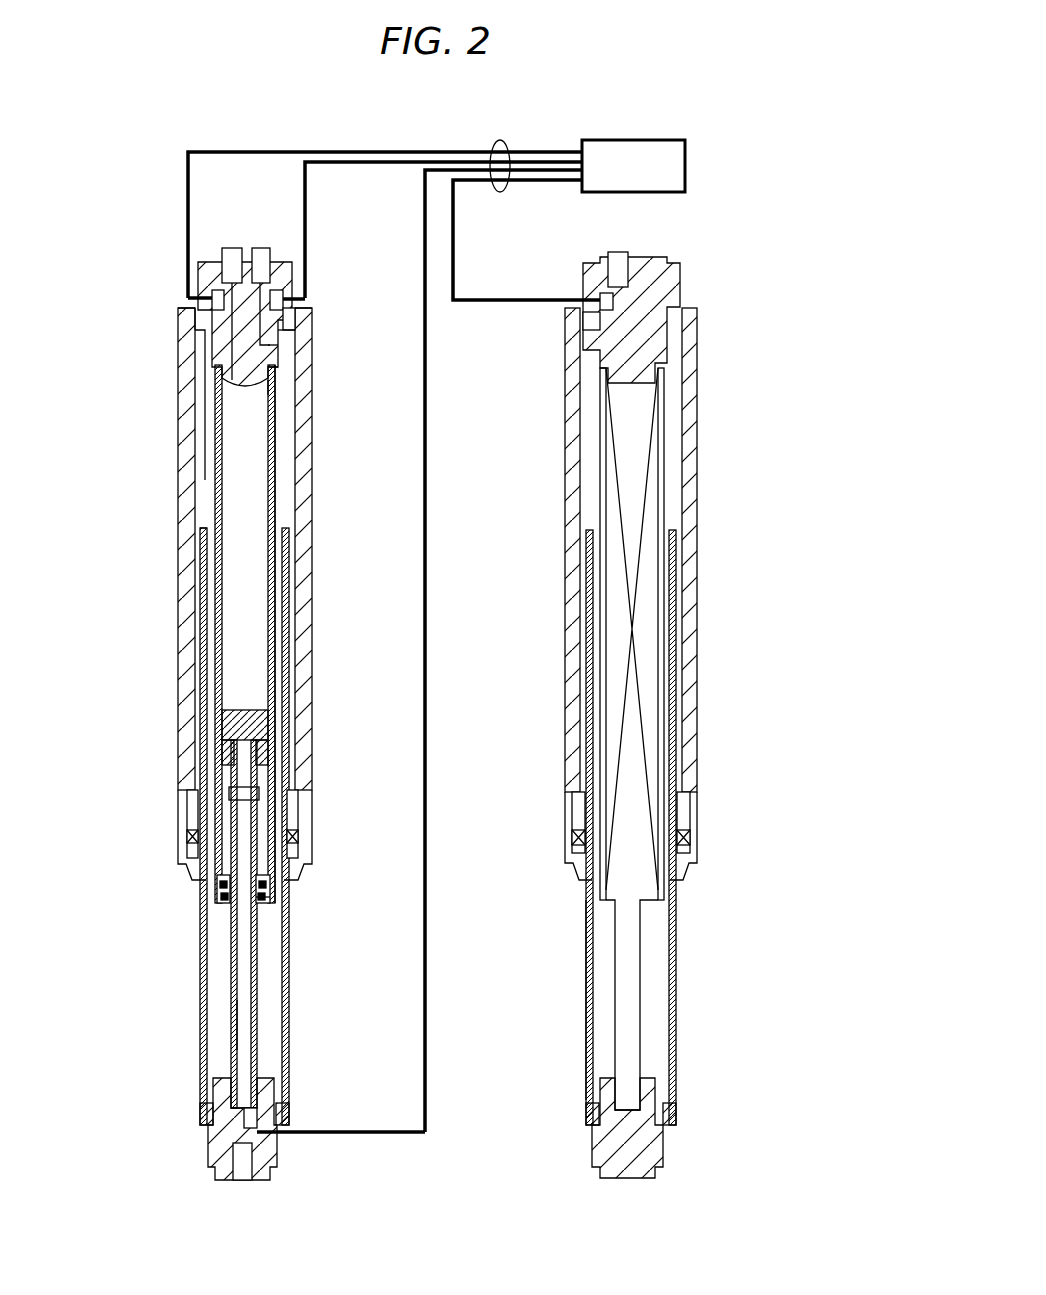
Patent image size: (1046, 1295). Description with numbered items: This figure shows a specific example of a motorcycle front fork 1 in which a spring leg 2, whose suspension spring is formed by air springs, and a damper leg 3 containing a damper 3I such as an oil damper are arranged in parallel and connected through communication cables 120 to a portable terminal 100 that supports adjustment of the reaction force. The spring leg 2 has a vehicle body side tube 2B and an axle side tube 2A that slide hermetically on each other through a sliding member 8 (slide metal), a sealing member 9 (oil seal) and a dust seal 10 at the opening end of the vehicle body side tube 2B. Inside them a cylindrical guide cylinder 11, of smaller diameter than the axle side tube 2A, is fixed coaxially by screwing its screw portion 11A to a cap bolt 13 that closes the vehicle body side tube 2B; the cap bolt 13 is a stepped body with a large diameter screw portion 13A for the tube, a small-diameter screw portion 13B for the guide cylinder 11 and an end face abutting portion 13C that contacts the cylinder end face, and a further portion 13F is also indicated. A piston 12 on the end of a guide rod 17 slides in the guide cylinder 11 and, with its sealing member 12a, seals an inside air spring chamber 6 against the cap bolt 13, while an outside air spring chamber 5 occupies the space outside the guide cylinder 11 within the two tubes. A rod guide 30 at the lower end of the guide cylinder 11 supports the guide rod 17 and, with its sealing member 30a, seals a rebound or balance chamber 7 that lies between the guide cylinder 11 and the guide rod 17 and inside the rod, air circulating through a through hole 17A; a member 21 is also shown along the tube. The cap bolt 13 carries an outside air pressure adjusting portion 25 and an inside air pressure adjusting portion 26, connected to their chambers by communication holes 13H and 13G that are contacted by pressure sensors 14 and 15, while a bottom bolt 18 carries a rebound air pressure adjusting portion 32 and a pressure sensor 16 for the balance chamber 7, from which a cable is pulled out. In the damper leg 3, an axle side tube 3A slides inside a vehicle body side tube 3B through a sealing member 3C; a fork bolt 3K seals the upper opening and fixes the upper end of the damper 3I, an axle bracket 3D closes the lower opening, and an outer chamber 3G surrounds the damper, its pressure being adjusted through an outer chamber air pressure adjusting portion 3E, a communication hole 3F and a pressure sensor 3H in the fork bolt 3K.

The front fork 1 is at (352, 118).
The spring leg 2 is at (172, 239).
The axle side tube 2A is at (202, 962).
The vehicle body side tube 2B is at (185, 732).
The damper leg 3 is at (690, 246).
The axle side tube 3A is at (586, 952).
The vehicle body side tube 3B is at (572, 734).
The sealing member 3C is at (690, 838).
The axle bracket 3D is at (656, 1156).
The outer chamber air pressure adjusting portion 3E is at (618, 267).
The communication hole 3F is at (598, 330).
The outer chamber 3G is at (578, 412).
The pressure sensor 3H is at (607, 300).
The damper 3I is at (634, 502).
The fork bolt 3K is at (653, 288).
The outside air spring chamber 5 is at (203, 485).
The inside air spring chamber 6 is at (262, 430).
The rebound air chamber 7 is at (240, 992).
The sliding member 8 is at (296, 814).
The sealing member 9 is at (300, 838).
The dust seal 10 is at (298, 868).
The guide cylinder 11 is at (278, 468).
The screw portion 11A is at (268, 395).
The piston 12 is at (262, 754).
The sealing member 12a is at (264, 726).
The cap bolt 13 is at (298, 280).
The large diameter screw portion 13A is at (296, 316).
The small-diameter screw portion 13B is at (272, 367).
The end face abutting portion 13C is at (284, 330).
The cap collar 13F is at (212, 398).
The communication hole 13G is at (198, 330).
The communication hole 13H is at (272, 346).
The pressure sensor 14 is at (275, 298).
The pressure sensor 15 is at (217, 298).
The pressure sensor 16 is at (268, 1148).
The guide rod 17 is at (254, 958).
The through hole 17A is at (252, 795).
The bottom bolt 18 is at (216, 1150).
The inner sleeve 21 is at (203, 668).
The outside air pressure adjusting portion 25 is at (260, 270).
The inside air pressure adjusting portion 26 is at (234, 270).
The rod guide 30 is at (218, 897).
The sealing member 30a is at (264, 896).
The rebound air pressure adjusting portion 32 is at (242, 1170).
The portable terminal 100 is at (688, 164).
The communication cables 120 is at (492, 152).